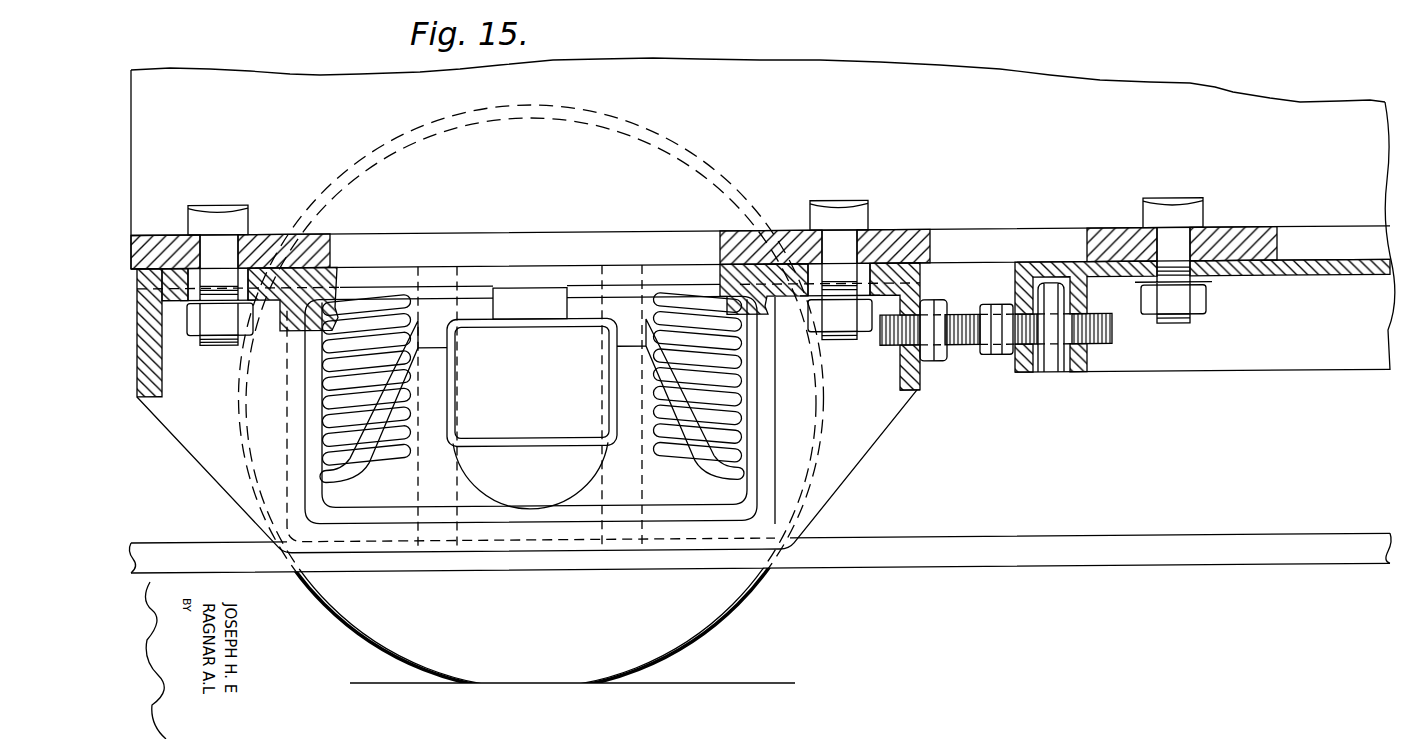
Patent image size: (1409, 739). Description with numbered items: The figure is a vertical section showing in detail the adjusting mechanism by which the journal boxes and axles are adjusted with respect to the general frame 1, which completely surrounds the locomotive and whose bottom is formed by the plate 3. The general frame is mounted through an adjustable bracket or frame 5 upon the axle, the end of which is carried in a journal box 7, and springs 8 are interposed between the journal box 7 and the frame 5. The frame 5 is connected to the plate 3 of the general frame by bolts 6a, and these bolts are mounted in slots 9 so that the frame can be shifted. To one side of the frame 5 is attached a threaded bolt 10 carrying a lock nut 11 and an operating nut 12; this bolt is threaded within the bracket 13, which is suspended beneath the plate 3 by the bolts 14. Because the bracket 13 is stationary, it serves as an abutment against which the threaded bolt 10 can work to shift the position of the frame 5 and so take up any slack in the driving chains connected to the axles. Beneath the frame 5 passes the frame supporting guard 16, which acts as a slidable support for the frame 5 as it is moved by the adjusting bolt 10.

The general frame 1 is at (1008, 80).
The bottom plate 3 is at (1306, 238).
The adjustable bracket 5 is at (856, 438).
The bolts 6a is at (880, 210).
The journal box 7 is at (600, 428).
The springs 8 is at (740, 402).
The slots 9 is at (259, 285).
The bolt 10 is at (967, 354).
The lock nut 11 is at (935, 368).
The operating nut 12 is at (1002, 356).
The bracket 13 is at (1207, 369).
The bolts 14 is at (1193, 212).
The frame supporting guard 16 is at (1075, 553).